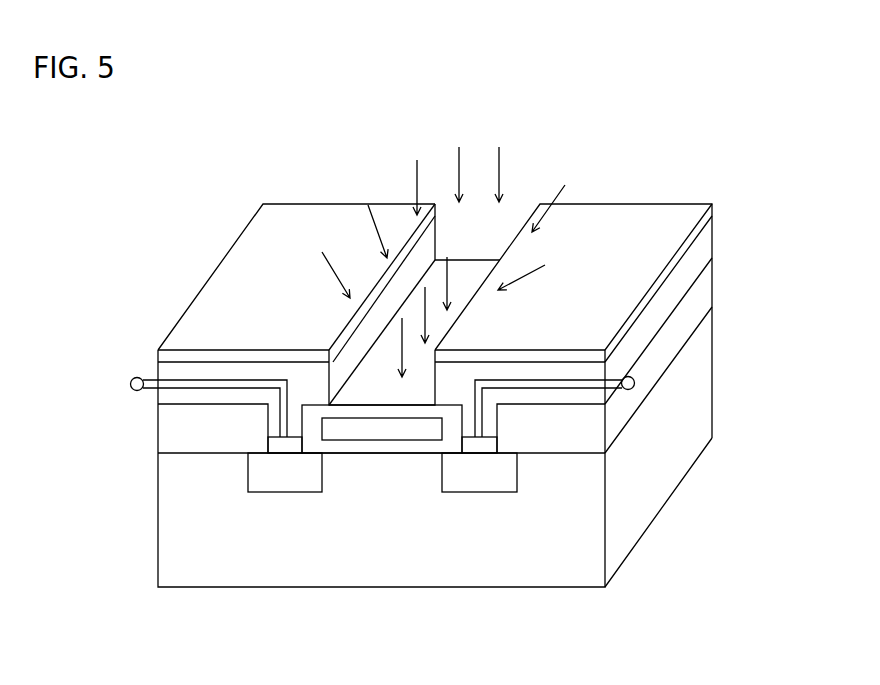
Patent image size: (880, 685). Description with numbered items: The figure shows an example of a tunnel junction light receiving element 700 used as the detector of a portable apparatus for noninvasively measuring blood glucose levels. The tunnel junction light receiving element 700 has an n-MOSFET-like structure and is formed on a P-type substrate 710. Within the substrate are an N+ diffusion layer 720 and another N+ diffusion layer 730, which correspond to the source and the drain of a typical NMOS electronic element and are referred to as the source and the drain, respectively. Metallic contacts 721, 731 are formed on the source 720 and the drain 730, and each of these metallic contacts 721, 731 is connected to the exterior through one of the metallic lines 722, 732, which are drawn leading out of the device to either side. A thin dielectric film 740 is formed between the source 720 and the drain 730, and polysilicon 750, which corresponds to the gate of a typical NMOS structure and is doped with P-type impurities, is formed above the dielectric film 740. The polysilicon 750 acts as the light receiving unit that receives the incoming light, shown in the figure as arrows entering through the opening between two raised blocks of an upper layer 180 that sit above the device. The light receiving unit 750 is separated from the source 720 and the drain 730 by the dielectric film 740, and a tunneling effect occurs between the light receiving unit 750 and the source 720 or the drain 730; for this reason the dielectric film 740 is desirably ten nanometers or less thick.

The tunnel junction light receiving element 700 is at (222, 123).
The light shielding layer 180 is at (655, 213).
The P-type substrate 710 is at (563, 573).
The N+ diffusion layer 720 is at (258, 492).
The N+ diffusion layer 730 is at (480, 492).
The dielectric film 740 is at (355, 453).
The polysilicon 750 is at (413, 440).
The metallic contact 721 is at (277, 446).
The metallic contact 731 is at (488, 445).
The metallic line 722 is at (130, 384).
The metallic line 732 is at (635, 383).